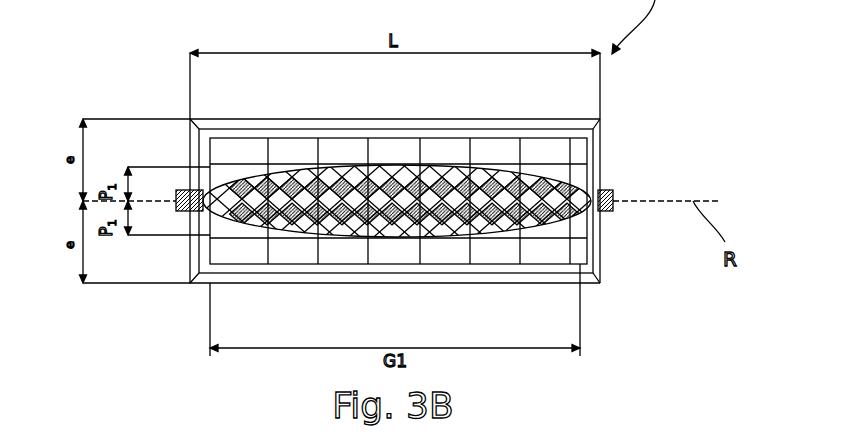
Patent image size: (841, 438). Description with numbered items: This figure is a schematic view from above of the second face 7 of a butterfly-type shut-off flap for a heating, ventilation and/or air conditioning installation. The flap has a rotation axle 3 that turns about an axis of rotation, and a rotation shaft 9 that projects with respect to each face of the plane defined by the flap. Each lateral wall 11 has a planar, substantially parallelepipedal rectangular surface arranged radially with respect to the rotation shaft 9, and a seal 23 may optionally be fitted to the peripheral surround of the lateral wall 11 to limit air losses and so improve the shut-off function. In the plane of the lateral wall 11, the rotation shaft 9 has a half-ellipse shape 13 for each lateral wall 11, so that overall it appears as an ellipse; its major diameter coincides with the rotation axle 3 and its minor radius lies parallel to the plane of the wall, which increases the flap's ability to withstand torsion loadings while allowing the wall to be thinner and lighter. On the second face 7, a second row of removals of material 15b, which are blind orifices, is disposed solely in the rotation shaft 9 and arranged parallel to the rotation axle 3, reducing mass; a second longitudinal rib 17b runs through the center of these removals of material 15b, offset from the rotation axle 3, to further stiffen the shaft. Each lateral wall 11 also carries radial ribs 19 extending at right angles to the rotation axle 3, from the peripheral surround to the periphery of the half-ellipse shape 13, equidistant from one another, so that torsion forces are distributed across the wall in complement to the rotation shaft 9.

The rotation axle 3 is at (613, 191).
The second face 7 is at (600, 250).
The rotation shaft 9 is at (597, 133).
The lateral wall 11 is at (434, 157).
The half-ellipse shape 13 is at (397, 238).
The second row of removals of material 15b is at (372, 176).
The second longitudinal rib 17b is at (272, 182).
The radial rib 19 is at (320, 165).
The seal 23 is at (553, 127).